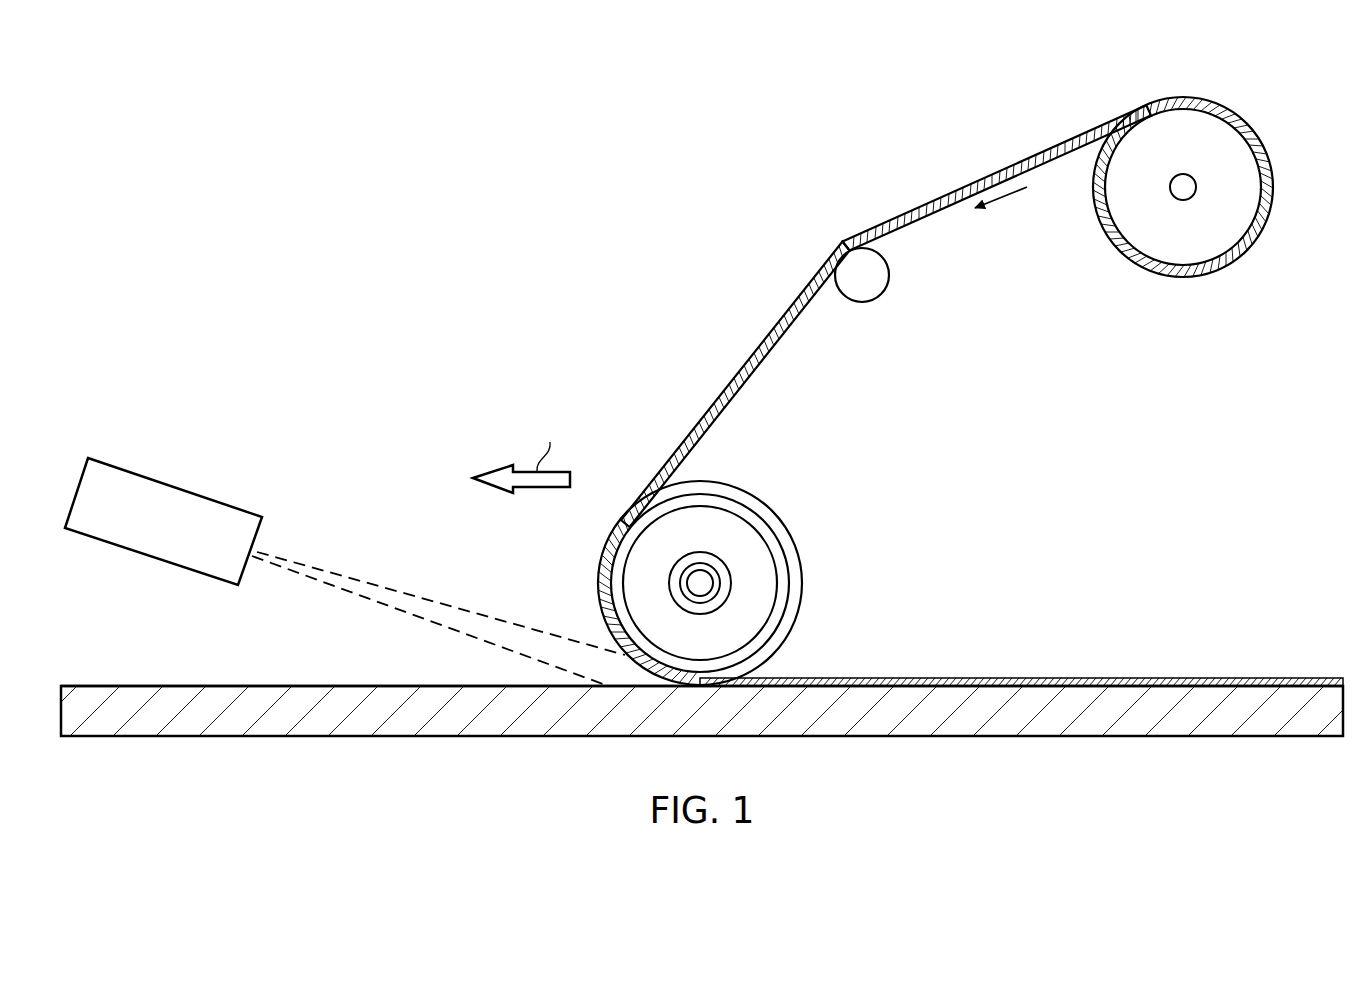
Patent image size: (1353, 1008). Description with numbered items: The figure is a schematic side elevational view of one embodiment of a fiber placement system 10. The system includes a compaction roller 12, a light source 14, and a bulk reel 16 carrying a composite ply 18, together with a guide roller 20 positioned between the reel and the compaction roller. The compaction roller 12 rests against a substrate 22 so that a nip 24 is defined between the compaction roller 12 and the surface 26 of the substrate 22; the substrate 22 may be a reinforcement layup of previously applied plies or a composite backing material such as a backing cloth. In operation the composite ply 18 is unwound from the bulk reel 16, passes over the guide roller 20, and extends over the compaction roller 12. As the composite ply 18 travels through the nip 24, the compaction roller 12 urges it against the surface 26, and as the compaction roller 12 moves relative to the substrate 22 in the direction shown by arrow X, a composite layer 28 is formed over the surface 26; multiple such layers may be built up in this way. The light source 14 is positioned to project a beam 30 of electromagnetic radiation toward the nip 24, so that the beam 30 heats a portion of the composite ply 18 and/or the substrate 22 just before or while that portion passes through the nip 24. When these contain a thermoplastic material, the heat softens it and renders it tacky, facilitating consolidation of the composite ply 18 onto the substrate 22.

The fiber placement system 10 is at (412, 170).
The compaction roller 12 is at (802, 580).
The light source 14 is at (168, 486).
The bulk reel 16 is at (1273, 187).
The composite ply 18 is at (981, 181).
The guide roller 20 is at (890, 273).
The substrate 22 is at (248, 720).
The nip 24 is at (612, 668).
The surface 26 is at (248, 686).
The composite layer 28 is at (1245, 678).
The beam 30 is at (393, 604).